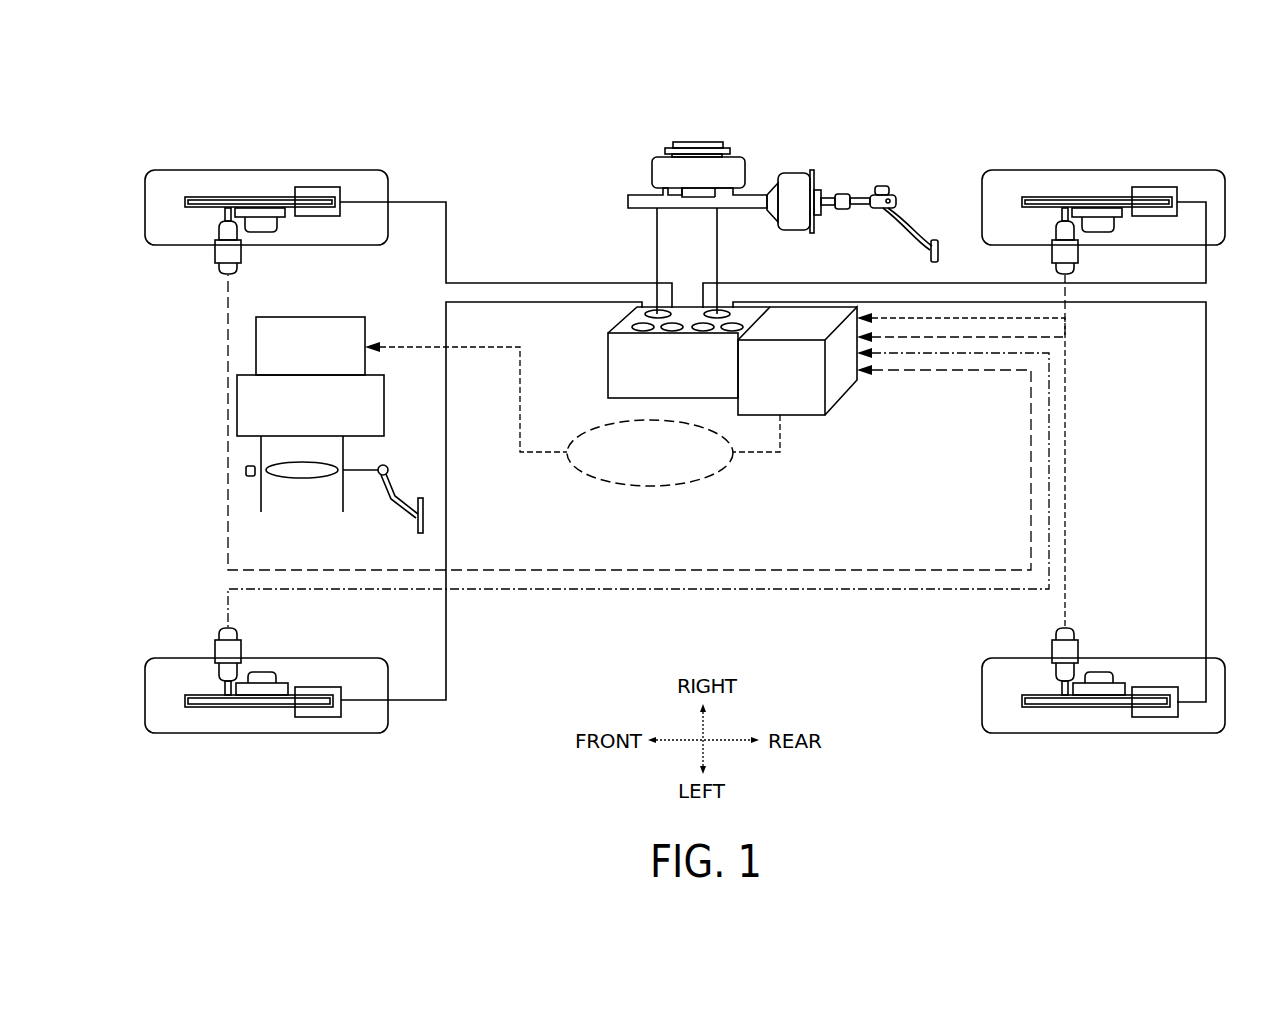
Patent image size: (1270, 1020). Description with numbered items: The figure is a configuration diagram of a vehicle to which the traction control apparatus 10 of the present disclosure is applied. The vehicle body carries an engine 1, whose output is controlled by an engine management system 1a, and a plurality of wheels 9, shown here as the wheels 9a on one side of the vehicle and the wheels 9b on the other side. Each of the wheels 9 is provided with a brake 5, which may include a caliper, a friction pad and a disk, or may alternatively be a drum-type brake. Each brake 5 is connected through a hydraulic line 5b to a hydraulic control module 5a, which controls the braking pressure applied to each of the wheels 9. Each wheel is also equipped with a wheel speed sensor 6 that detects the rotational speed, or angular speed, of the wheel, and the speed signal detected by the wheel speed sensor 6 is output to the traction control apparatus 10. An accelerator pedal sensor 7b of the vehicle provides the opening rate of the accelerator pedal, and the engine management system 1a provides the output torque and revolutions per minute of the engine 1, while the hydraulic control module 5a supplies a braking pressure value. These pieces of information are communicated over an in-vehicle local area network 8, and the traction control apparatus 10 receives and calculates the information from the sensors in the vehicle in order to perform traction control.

The engine 1 is at (385, 400).
The engine management system 1a is at (338, 316).
The brake 5 is at (320, 187).
The hydraulic control module 5a is at (608, 352).
The hydraulic line 5b is at (490, 283).
The wheel speed sensor 6 is at (213, 253).
The accelerator pedal sensor 7b is at (250, 477).
The in-vehicle local area network 8 is at (700, 480).
The wheels 9 is at (362, 116).
The left wheel 9a is at (338, 170).
The right wheel 9b is at (1174, 170).
The traction control apparatus 10 is at (843, 397).